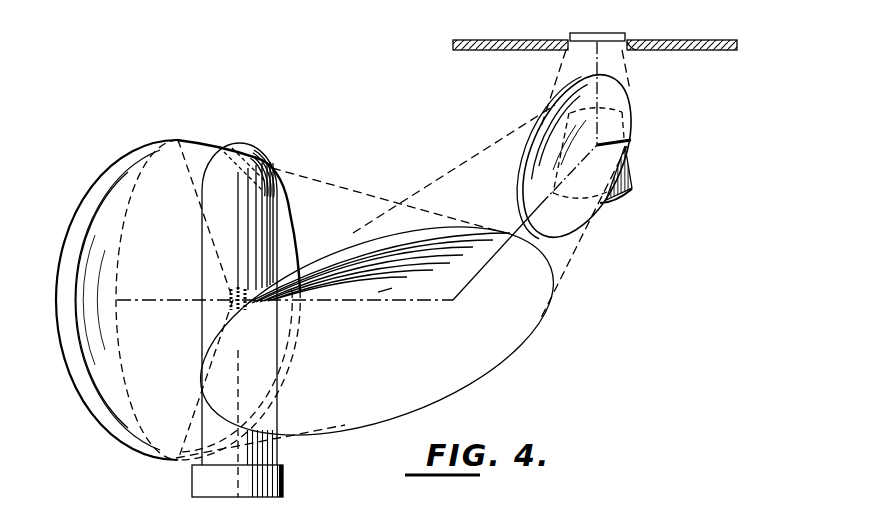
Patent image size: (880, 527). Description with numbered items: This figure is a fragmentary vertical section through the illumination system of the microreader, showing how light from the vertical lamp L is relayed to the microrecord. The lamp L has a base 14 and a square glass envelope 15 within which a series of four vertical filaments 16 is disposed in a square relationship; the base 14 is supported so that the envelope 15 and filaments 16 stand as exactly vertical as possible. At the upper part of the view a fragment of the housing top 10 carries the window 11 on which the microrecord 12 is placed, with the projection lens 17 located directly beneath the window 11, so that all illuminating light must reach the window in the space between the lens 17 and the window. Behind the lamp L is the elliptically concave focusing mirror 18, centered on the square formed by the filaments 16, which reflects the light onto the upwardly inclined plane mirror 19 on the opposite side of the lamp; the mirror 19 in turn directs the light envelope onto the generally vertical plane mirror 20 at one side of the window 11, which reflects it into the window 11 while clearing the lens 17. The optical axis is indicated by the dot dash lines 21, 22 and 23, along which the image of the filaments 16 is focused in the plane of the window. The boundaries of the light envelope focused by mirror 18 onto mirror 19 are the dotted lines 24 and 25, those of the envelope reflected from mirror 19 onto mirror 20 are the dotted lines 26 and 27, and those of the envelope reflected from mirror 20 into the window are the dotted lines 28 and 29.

The top of housing 10 is at (706, 40).
The window 11 is at (628, 47).
The microrecord 12 is at (600, 33).
The base 14 is at (285, 490).
The envelope 15 is at (202, 239).
The filaments 16 is at (228, 306).
The projection lens 17 is at (634, 185).
The focusing mirror 18 is at (78, 205).
The plane mirror 19 is at (462, 392).
The plane mirror 20 is at (633, 110).
The dot dash line 21 is at (388, 303).
The dot dash line 22 is at (490, 258).
The dot dash line 23 is at (631, 141).
The dotted line 24 is at (320, 174).
The dotted line 25 is at (283, 440).
The dotted line 26 is at (466, 160).
The dotted line 27 is at (578, 244).
The dotted line 28 is at (628, 75).
The dotted line 29 is at (558, 80).
The lamp L is at (267, 150).